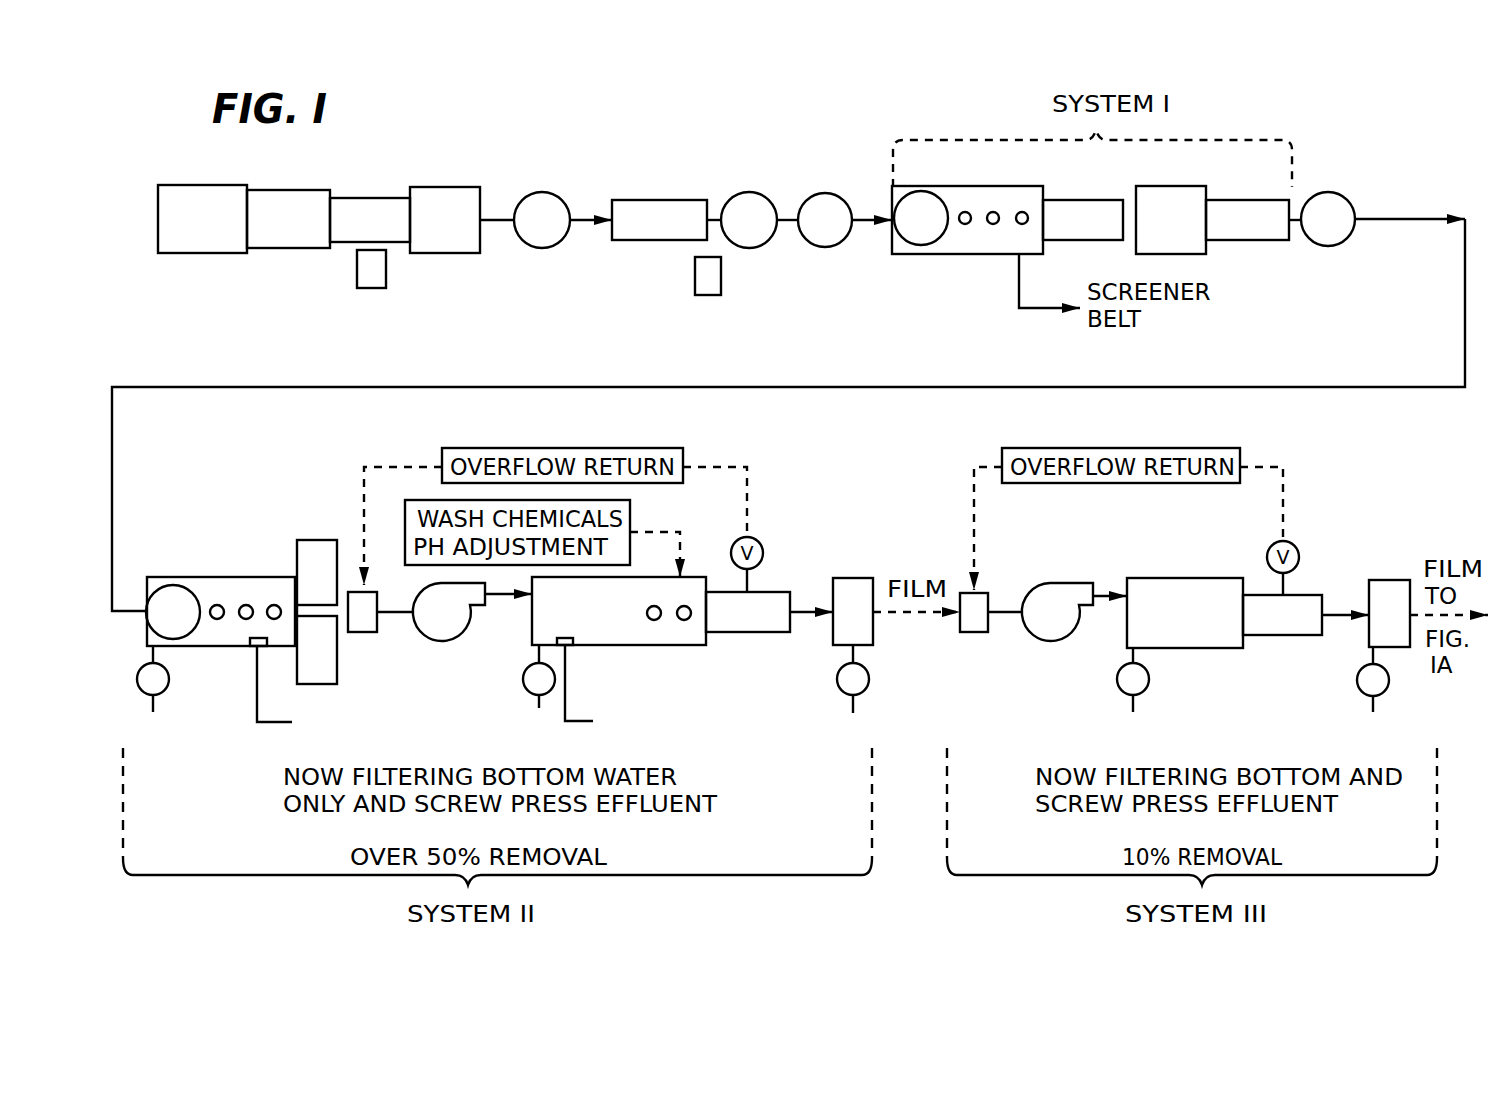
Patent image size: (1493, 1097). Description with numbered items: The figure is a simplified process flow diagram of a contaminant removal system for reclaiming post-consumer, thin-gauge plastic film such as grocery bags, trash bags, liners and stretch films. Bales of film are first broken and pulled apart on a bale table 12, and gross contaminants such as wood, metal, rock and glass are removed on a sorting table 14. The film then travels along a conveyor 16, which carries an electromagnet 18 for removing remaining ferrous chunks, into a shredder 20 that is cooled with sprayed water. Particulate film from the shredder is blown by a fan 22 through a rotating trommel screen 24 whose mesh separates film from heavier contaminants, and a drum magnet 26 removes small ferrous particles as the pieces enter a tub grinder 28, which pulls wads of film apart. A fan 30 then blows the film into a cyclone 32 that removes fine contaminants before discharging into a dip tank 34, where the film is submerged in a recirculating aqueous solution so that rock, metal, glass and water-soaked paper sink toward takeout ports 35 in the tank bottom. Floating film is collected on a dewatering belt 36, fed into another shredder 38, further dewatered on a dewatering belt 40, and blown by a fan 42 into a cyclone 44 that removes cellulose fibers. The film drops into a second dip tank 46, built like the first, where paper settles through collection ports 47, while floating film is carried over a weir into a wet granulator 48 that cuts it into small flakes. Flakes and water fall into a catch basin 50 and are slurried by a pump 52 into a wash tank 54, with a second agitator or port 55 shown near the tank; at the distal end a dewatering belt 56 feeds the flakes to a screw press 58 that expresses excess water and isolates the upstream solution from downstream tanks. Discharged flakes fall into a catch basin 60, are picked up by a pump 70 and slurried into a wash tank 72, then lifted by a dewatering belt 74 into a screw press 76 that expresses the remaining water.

The bale table 12 is at (178, 190).
The sorting table 14 is at (277, 192).
The conveyor 16 is at (357, 203).
The electromagnet 18 is at (362, 273).
The shredder 20 is at (432, 233).
The fan 22 is at (529, 233).
The rotating trommel screen 24 is at (642, 205).
The drum magnet 26 is at (698, 275).
The tub grinder 28 is at (736, 233).
The fan 30 is at (812, 233).
The cyclone 32 is at (908, 231).
The dip tank 34 is at (975, 187).
The takeout ports 35 is at (991, 226).
The dewatering belt 36 is at (1077, 200).
The shredder 38 is at (1158, 233).
The dewatering belt 40 is at (1227, 200).
The fan 42 is at (1315, 232).
The cyclone 44 is at (160, 625).
The second dip tank 46 is at (210, 580).
The collection ports 47 is at (245, 619).
The wet granulator 48 is at (312, 627).
The catch basin 50 is at (363, 627).
The pump 52 is at (427, 633).
The wash tank 54 is at (693, 645).
The wash tank agitator 55 is at (684, 620).
The dewatering belt 56 is at (762, 632).
The screw press 58 is at (843, 578).
The catch basin 60 is at (975, 632).
The pump 70 is at (1042, 638).
The wash tank 72 is at (1168, 585).
The dewatering belt 74 is at (1297, 635).
The screw press 76 is at (1382, 587).